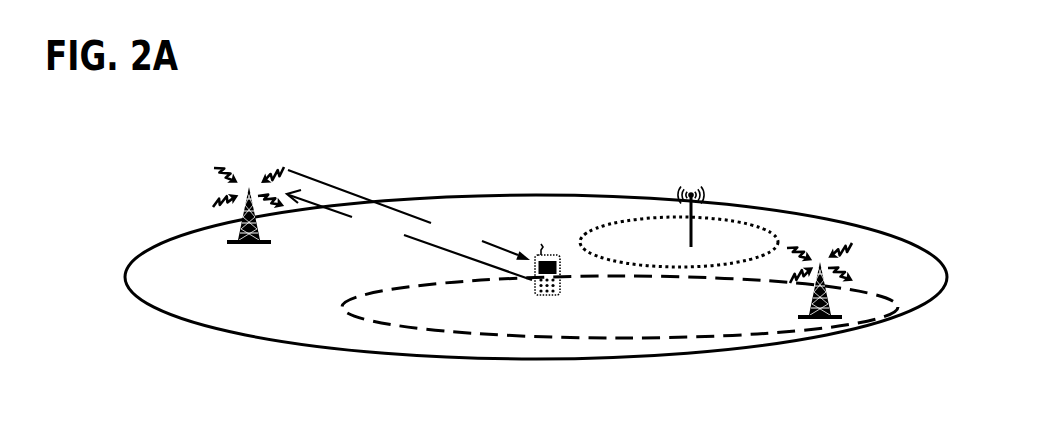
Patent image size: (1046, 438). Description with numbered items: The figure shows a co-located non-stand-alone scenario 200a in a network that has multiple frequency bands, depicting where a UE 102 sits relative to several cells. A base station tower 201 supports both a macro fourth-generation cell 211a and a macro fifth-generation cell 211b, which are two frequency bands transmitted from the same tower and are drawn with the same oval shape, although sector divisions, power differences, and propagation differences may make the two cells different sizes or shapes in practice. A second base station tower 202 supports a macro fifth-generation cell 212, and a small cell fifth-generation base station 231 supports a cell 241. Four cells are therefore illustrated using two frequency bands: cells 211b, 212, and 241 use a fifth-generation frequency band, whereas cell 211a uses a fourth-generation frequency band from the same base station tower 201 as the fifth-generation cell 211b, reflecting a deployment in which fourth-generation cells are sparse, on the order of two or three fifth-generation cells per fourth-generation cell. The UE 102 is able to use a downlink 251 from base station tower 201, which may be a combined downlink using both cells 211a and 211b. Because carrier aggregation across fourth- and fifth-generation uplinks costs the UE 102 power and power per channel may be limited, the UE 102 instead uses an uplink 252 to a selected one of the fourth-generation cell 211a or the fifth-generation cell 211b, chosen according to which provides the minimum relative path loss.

The wireless network environment 200a is at (723, 72).
The UE 102 is at (543, 297).
The base station tower 201 is at (246, 248).
The base station tower 202 is at (821, 323).
The macro 4G cell 211a is at (298, 315).
The macro 5G cell 211b is at (335, 280).
The macro 5G cell 212 is at (712, 315).
The small cell 5G base station 231 is at (689, 227).
The cell 241 is at (738, 253).
The downlink 251 is at (409, 215).
The uplink 252 is at (409, 235).